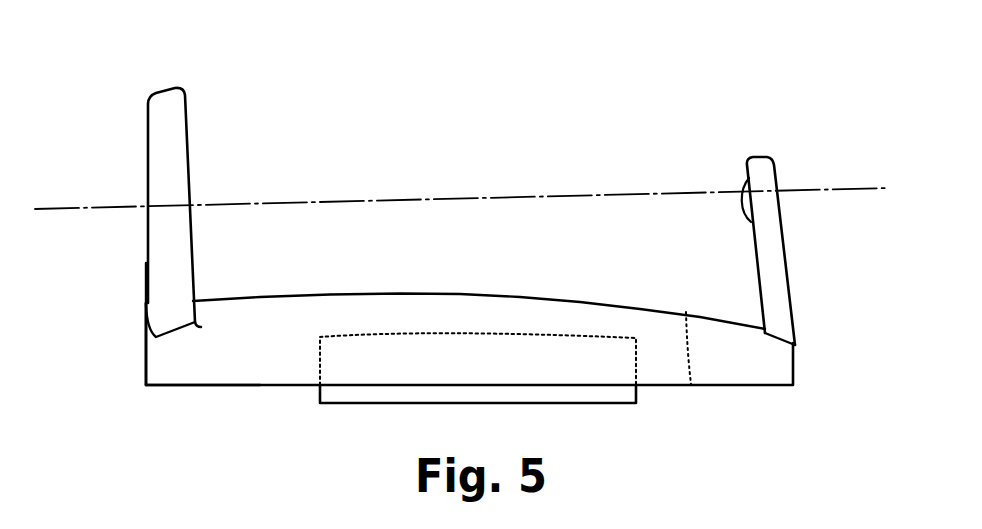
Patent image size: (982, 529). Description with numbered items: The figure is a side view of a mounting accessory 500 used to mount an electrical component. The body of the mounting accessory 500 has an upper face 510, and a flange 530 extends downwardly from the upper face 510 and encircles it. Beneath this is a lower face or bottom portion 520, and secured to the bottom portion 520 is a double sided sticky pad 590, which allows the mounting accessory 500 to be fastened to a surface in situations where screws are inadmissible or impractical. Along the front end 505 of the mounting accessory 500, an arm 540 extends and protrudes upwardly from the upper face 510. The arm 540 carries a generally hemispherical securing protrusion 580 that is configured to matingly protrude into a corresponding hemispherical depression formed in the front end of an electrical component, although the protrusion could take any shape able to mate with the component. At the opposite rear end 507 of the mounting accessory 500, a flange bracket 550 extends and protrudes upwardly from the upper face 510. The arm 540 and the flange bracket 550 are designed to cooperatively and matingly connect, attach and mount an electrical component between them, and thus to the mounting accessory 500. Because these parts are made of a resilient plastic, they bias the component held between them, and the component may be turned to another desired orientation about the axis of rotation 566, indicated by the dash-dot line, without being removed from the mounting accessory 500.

The mounting accessory 500 is at (461, 263).
The front end 505 is at (795, 367).
The rear end 507 is at (145, 351).
The upper face 510 is at (672, 310).
The lower face or bottom portion 520 is at (692, 387).
The flange 530 is at (212, 352).
The arm 540 is at (776, 195).
The flange bracket 550 is at (165, 163).
The axis of rotation 566 is at (838, 196).
The securing protrusion 580 is at (745, 193).
The double sided sticky pad 590 is at (416, 395).